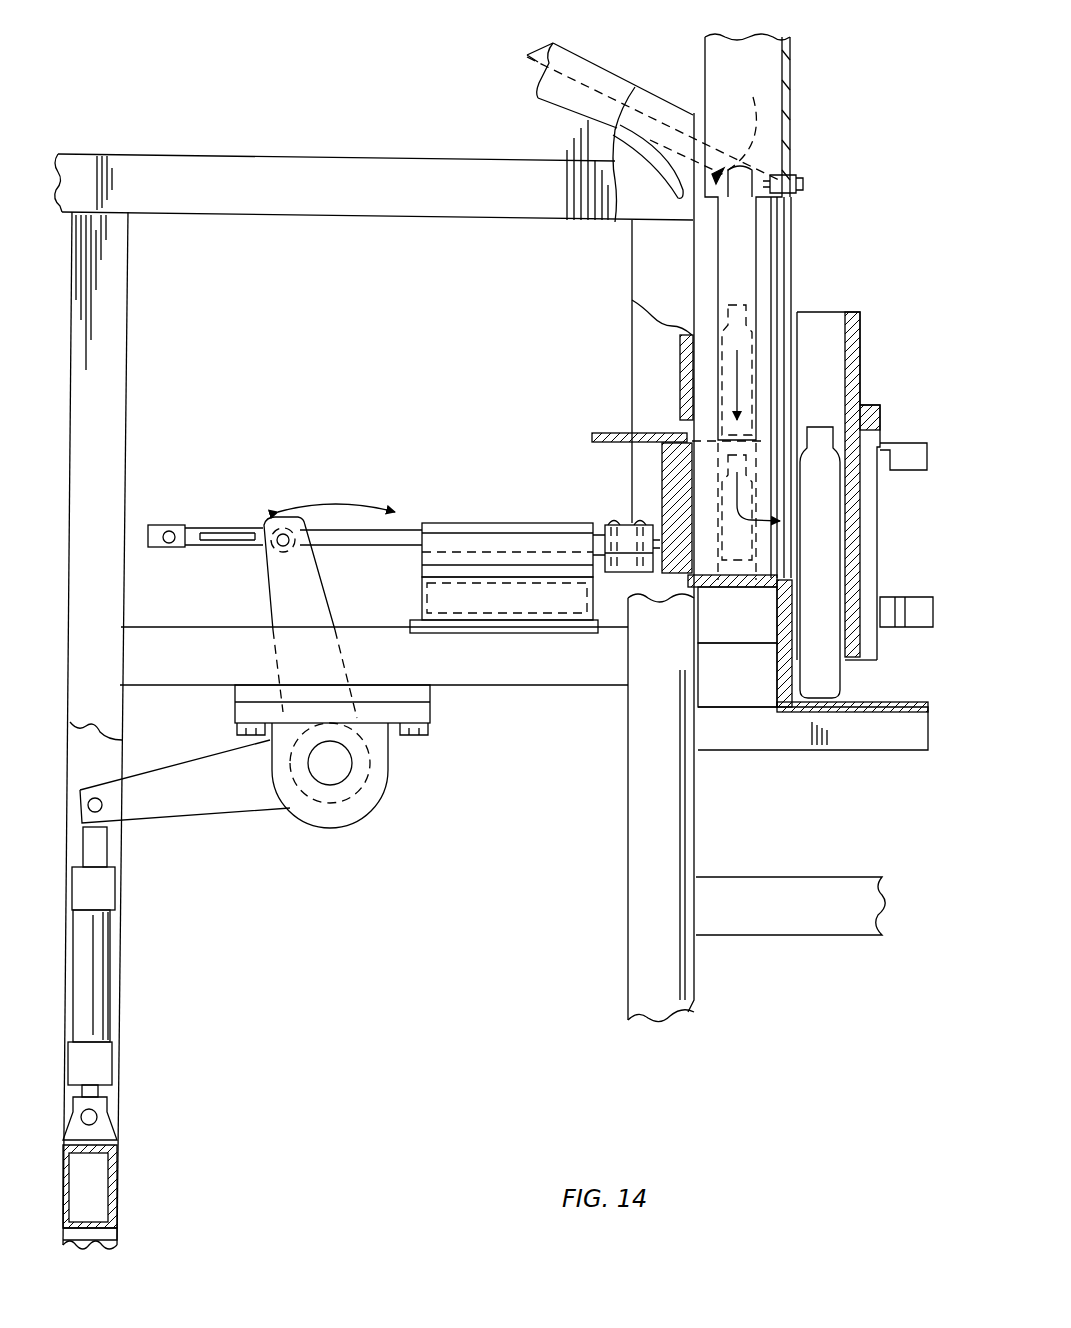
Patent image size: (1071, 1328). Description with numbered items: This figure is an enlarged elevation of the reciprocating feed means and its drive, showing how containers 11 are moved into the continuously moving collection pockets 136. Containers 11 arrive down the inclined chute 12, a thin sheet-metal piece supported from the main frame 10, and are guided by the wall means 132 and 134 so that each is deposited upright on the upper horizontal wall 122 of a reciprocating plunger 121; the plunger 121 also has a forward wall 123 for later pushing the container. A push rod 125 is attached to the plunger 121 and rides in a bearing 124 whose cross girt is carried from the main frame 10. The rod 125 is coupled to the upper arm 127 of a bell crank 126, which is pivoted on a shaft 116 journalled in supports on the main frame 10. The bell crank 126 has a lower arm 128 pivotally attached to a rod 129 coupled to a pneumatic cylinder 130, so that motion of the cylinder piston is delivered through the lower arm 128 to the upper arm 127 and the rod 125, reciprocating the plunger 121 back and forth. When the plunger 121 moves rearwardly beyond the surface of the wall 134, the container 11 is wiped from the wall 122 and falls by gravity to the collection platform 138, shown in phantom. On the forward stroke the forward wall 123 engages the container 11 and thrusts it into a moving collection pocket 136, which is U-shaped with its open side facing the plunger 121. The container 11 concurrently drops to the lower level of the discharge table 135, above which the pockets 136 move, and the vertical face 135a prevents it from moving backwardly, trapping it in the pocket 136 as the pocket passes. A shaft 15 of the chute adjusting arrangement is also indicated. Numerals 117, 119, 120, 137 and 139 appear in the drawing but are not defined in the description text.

The main frame 10 is at (535, 668).
The containers 11 is at (817, 694).
The inclined chute 12 is at (603, 88).
The shaft 15 is at (55, 462).
The shaft 116 is at (348, 766).
The rod 117 is at (170, 530).
The bracket 119 is at (610, 524).
The cylinder 120 is at (463, 512).
The reciprocating plungers 121 is at (663, 460).
The upper horizontal walls 122 is at (620, 430).
The forward walls 123 is at (688, 510).
The bearings 124 is at (425, 600).
The push rods 125 is at (400, 528).
The bell crank 126 is at (272, 790).
The upper arms 127 is at (270, 592).
The lower arm 128 is at (193, 806).
The rod 129 is at (120, 850).
The pneumatic cylinder 130 is at (105, 1022).
The wall means 132 is at (788, 100).
The wall means 134 is at (690, 372).
The discharge table 135 is at (880, 715).
The vertical face 135a is at (793, 662).
The collection pockets 136 is at (828, 314).
The flange 137 is at (893, 440).
The collection platform 138 is at (740, 568).
The bracket 139 is at (418, 712).